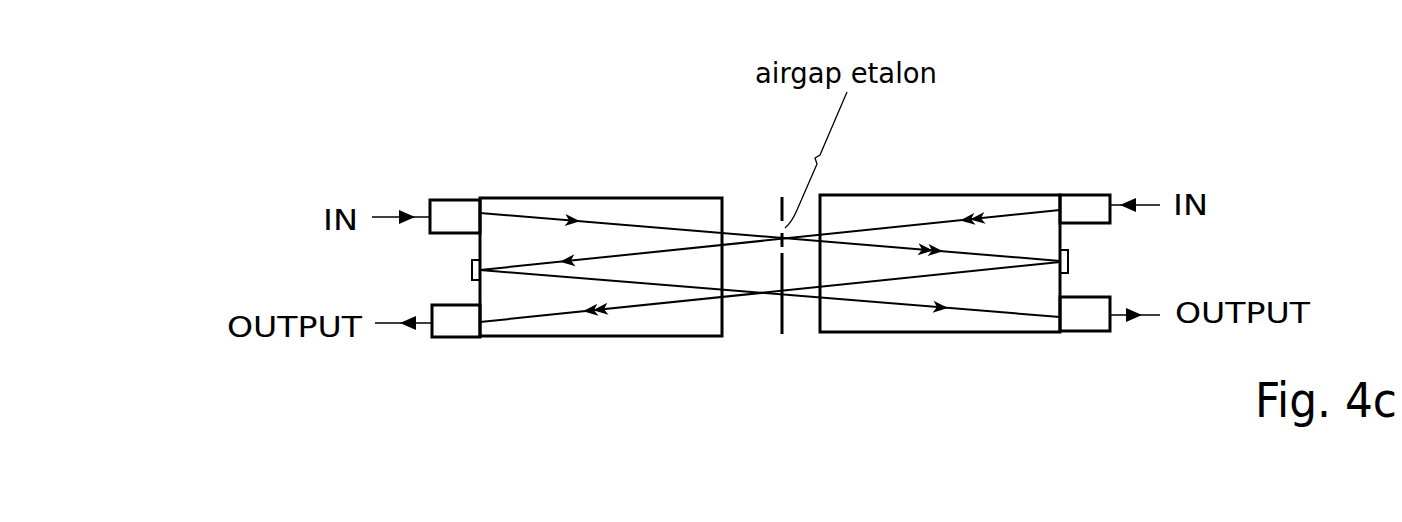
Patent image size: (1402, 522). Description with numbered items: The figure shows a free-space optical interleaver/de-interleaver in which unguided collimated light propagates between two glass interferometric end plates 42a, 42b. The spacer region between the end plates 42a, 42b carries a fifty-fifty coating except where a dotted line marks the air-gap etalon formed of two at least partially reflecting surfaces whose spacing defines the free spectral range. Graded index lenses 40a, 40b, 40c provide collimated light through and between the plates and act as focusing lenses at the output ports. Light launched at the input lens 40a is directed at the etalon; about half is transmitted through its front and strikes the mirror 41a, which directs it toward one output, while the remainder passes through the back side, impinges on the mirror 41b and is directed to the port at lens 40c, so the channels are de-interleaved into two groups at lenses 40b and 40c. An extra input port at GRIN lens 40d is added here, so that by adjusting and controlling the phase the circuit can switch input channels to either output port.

The graded index (GRIN) lens 40a is at (386, 151).
The graded index (GRIN) lens 40b is at (390, 371).
The graded index (GRIN) lens 40c is at (1019, 380).
The graded index (GRIN) lens 40d is at (1137, 151).
The mirror 41a is at (1199, 234).
The mirror 41b is at (273, 267).
The glass interferometric end plate 42a is at (601, 210).
The glass interferometric end plate 42b is at (940, 205).